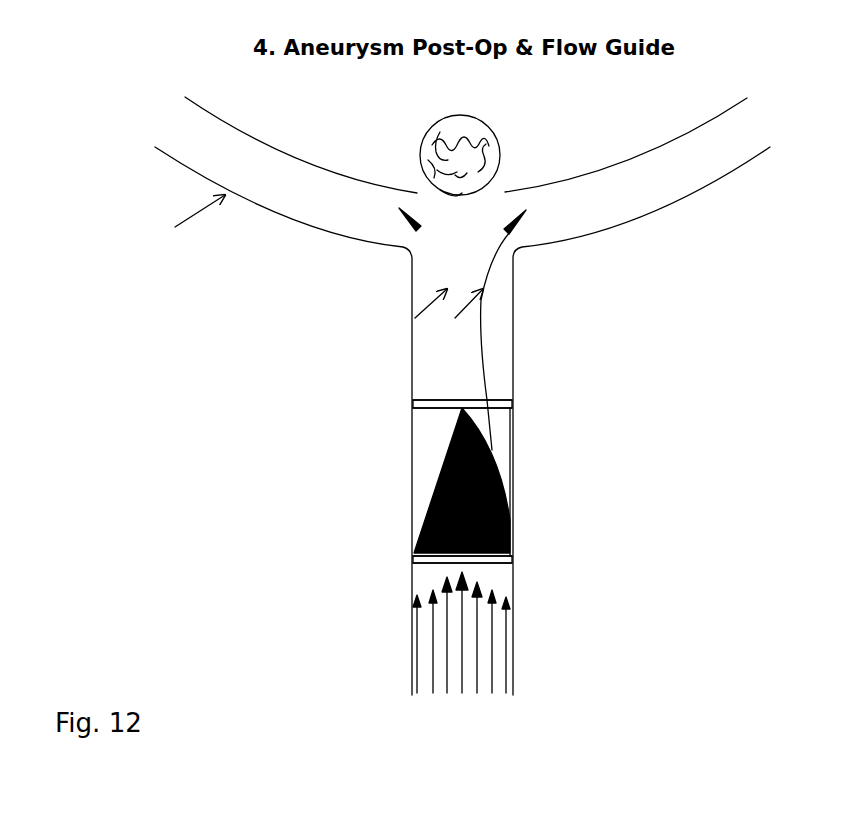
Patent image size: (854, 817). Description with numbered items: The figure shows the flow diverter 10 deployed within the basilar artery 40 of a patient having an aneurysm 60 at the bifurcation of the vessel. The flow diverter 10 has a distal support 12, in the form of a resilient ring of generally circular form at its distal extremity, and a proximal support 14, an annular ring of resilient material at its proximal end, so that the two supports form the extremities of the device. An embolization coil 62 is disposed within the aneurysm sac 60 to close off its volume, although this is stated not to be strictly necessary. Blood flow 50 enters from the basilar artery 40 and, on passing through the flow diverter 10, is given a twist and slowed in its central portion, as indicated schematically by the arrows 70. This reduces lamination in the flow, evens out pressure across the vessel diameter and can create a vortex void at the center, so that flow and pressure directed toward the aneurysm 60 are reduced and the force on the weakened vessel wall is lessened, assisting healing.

The flow diverter 10 is at (528, 457).
The distal support 12 is at (513, 562).
The proximal support 14 is at (513, 407).
The basilar artery 40 is at (408, 381).
The flow of blood 50 is at (458, 644).
The aneurysm 60 is at (508, 152).
The embolization coil 62 is at (440, 155).
The arrows 70 is at (453, 320).